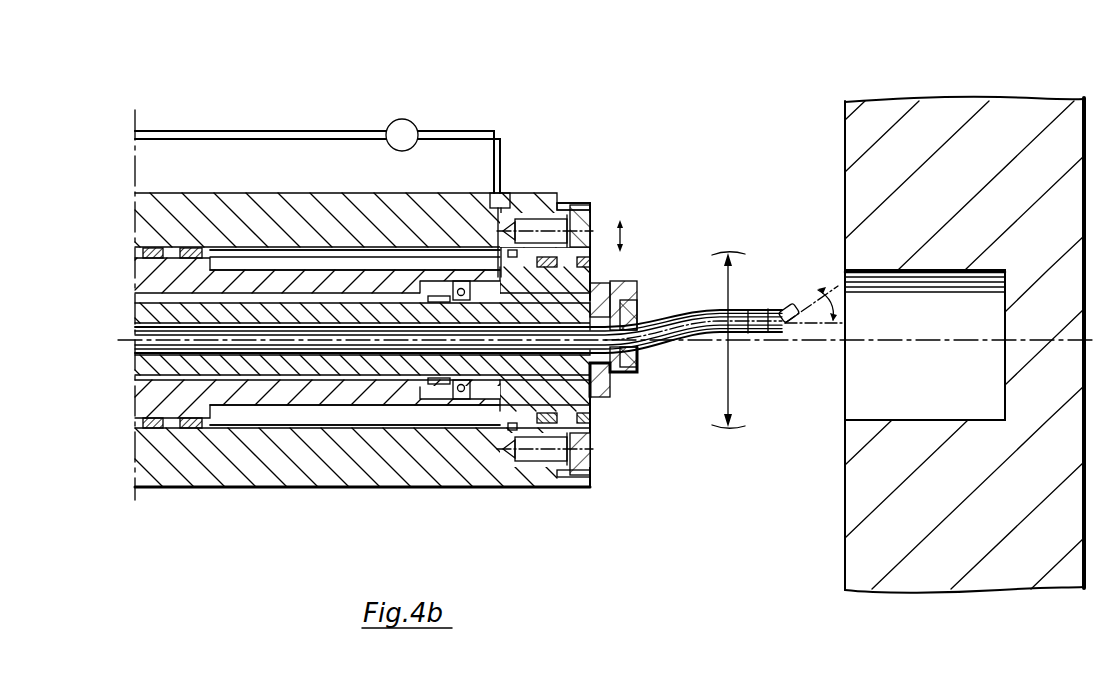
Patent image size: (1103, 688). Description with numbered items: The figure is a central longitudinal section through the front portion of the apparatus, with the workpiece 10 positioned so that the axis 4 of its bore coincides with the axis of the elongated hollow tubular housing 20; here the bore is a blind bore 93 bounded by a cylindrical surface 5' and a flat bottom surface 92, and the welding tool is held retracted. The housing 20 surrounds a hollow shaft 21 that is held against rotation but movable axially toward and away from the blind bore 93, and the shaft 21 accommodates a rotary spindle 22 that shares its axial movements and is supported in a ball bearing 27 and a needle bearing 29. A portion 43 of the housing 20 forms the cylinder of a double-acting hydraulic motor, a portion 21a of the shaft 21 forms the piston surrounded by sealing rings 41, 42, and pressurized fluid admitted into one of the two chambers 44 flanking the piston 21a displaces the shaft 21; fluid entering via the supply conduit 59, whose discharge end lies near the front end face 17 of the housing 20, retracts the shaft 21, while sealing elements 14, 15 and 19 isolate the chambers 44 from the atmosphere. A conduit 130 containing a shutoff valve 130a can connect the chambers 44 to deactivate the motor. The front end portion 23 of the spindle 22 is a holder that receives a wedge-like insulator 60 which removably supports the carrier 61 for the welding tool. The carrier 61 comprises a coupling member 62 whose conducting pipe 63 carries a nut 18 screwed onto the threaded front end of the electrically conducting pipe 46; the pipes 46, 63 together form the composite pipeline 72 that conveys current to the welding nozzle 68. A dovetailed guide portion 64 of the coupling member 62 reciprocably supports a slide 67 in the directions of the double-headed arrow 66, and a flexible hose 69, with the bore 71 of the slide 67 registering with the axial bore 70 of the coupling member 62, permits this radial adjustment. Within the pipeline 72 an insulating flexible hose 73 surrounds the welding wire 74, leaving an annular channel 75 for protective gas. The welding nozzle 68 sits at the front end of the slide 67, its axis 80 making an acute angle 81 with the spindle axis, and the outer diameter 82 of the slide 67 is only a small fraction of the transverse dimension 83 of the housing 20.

The axis 4 is at (830, 345).
The cylindrical surface 5' is at (925, 345).
The workpiece 10 is at (878, 118).
The sealing element 14 is at (524, 245).
The sealing element 15 is at (542, 257).
The front end face 17 is at (590, 212).
The nut 18 is at (408, 352).
The sealing element 19 is at (576, 468).
The housing 20 is at (308, 195).
The hollow shaft 21 is at (287, 392).
The piston 21a is at (152, 265).
The rotary spindle 22 is at (235, 362).
The front end portion 23 is at (560, 203).
The ball bearing 27 is at (467, 283).
The needle bearing 29 is at (425, 358).
The sealing ring 41 is at (175, 250).
The sealing ring 42 is at (195, 250).
The cylinder 43 is at (365, 200).
The chambers 44 is at (258, 262).
The pipe 46 is at (370, 352).
The supply conduit 59 is at (512, 195).
The wedge-like insulator 60 is at (603, 235).
The carrier 61 is at (690, 307).
The coupling member 62 is at (622, 372).
The pipe 63 is at (598, 400).
The guide portion 64 is at (630, 283).
The double-headed arrow 66 is at (615, 295).
The slide 67 is at (643, 322).
The welding nozzle 68 is at (792, 300).
The flexible hose 69 is at (642, 345).
The axial bore 70 is at (556, 420).
The bore 71 is at (684, 312).
The pipeline 72 is at (430, 313).
The flexible hose 73 is at (665, 370).
The welding wire 74 is at (690, 345).
The annular channel 75 is at (508, 446).
The axis 80 is at (776, 330).
The acute angle 81 is at (830, 290).
The outer diameter 82 is at (742, 428).
The transverse dimension 83 is at (760, 330).
The flat bottom surface 92 is at (998, 283).
The blind bore 93 is at (887, 402).
The conduit 130 is at (430, 133).
The shutoff valve 130a is at (392, 133).